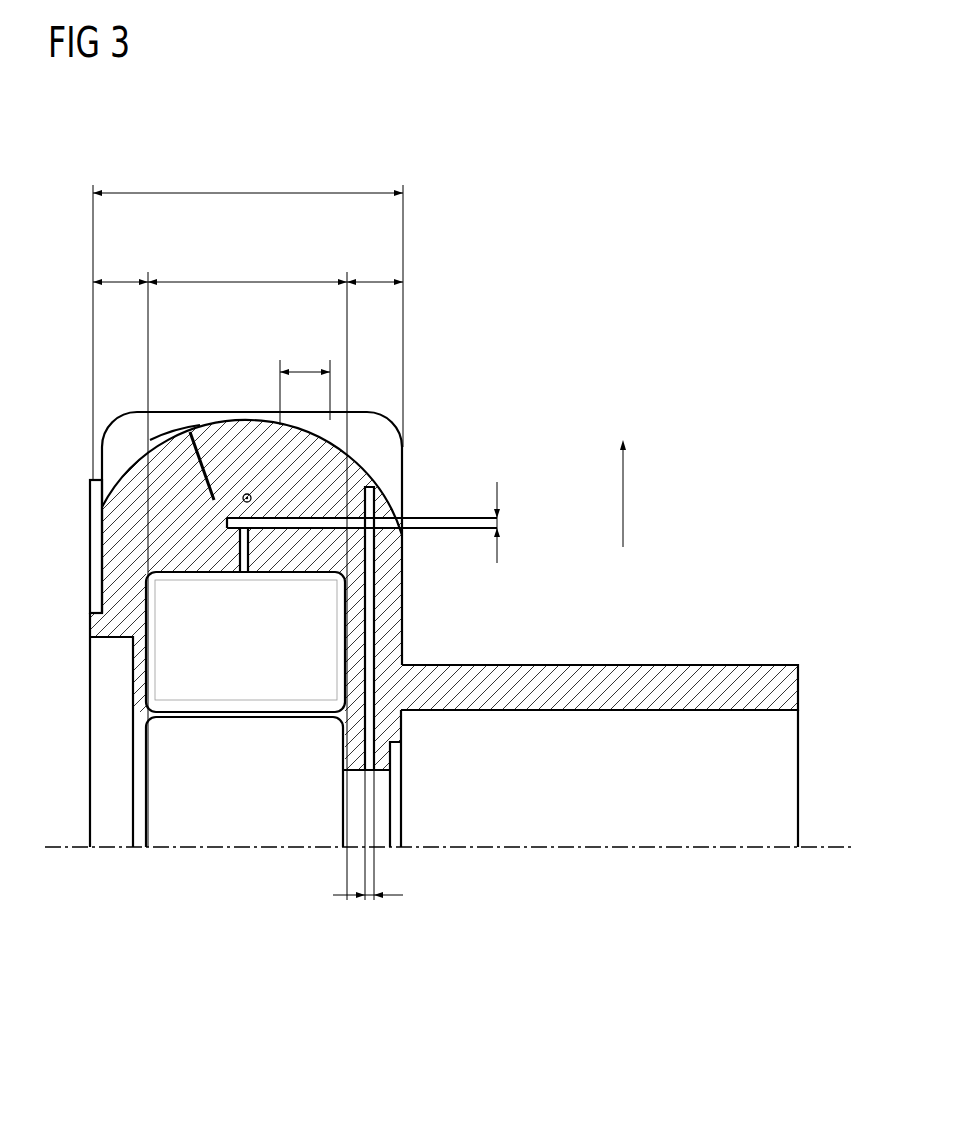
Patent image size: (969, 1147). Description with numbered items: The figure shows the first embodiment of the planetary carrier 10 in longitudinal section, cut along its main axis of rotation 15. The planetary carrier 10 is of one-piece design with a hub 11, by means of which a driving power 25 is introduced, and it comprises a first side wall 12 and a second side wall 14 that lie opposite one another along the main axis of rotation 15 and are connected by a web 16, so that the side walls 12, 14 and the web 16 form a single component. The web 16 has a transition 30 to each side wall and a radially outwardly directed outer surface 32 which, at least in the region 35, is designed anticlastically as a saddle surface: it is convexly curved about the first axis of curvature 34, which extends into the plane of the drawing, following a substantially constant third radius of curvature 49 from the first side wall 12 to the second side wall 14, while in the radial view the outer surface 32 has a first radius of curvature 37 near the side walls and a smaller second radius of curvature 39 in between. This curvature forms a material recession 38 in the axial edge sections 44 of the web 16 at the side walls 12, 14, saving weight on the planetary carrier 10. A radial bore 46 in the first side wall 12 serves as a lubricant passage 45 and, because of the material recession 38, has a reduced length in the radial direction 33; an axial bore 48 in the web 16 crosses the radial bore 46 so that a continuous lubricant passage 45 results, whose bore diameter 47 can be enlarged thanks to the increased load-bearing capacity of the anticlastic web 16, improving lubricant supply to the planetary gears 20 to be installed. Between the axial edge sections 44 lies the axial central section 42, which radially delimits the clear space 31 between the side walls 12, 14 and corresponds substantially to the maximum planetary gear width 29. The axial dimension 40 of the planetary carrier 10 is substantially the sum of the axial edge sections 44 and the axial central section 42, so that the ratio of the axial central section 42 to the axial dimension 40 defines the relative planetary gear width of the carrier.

The planetary carrier 10 is at (602, 255).
The hub 11 is at (670, 665).
The first side wall 12 is at (398, 635).
The second side wall 14 is at (118, 540).
The main axis of rotation 15 is at (751, 850).
The web 16 is at (207, 537).
The planetary gear 20 is at (173, 865).
The driving power 25 is at (822, 882).
The maximum planetary gear width 29 is at (252, 280).
The transition 30 is at (168, 436).
The clear space 31 is at (197, 785).
The outer surface 32 is at (183, 369).
The radial direction 33 is at (623, 495).
The first axis of curvature 34 is at (246, 493).
The region 35 is at (307, 370).
The first radius of curvature 37 is at (400, 533).
The material recession 38 is at (380, 461).
The second radius of curvature 39 is at (260, 418).
The axial dimension 40 is at (253, 190).
The axial central section 42 is at (247, 247).
The axial edge section 44 is at (372, 280).
The lubricant passage 45 is at (345, 686).
The radial bore 46 is at (367, 733).
The bore diameter 47 is at (370, 938).
The axial bore 48 is at (302, 530).
The third radius of curvature 49 is at (206, 462).